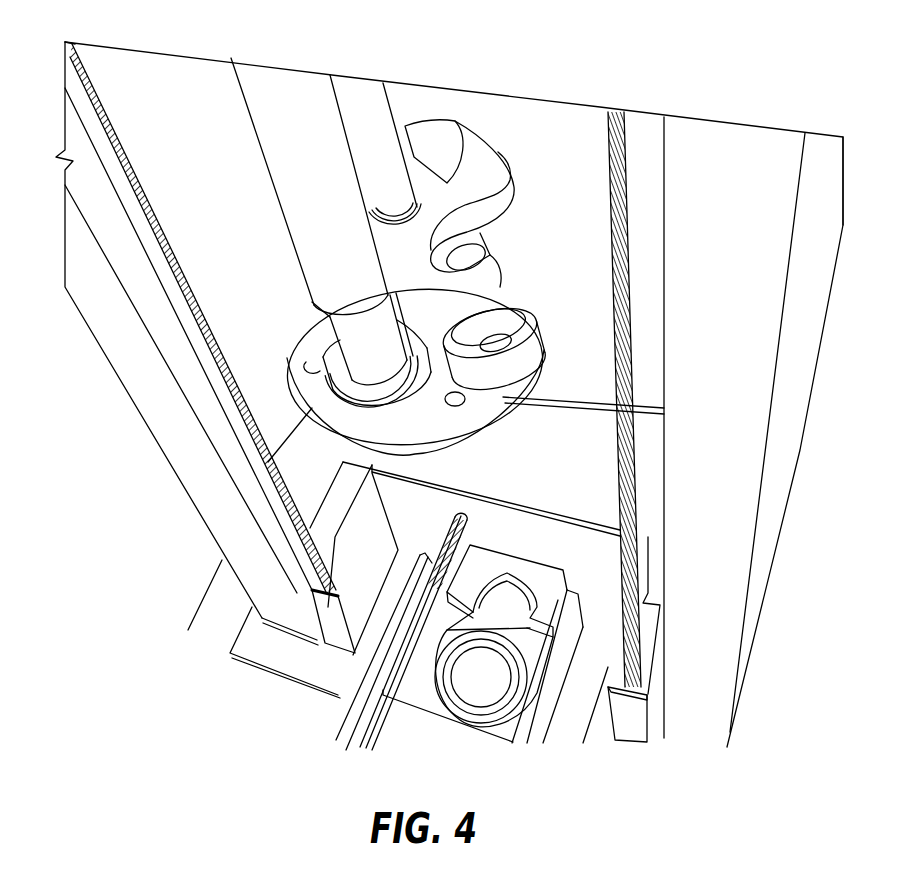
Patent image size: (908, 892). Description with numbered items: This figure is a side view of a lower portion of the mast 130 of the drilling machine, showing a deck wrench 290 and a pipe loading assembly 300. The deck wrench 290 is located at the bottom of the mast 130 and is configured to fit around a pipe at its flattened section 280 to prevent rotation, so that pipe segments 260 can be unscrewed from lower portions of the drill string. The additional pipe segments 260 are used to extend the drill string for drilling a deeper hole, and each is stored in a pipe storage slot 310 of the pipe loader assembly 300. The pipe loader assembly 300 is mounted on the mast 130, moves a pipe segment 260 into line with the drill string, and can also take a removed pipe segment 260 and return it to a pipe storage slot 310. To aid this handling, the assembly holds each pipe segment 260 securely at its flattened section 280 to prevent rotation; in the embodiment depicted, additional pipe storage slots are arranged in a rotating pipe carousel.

The mast 130 is at (720, 178).
The pipe segment 260 is at (292, 115).
The flattened section 280 is at (313, 315).
The deck wrench 290 is at (553, 583).
The pipe loader assembly 300 is at (500, 152).
The pipe storage slot 310 is at (503, 328).